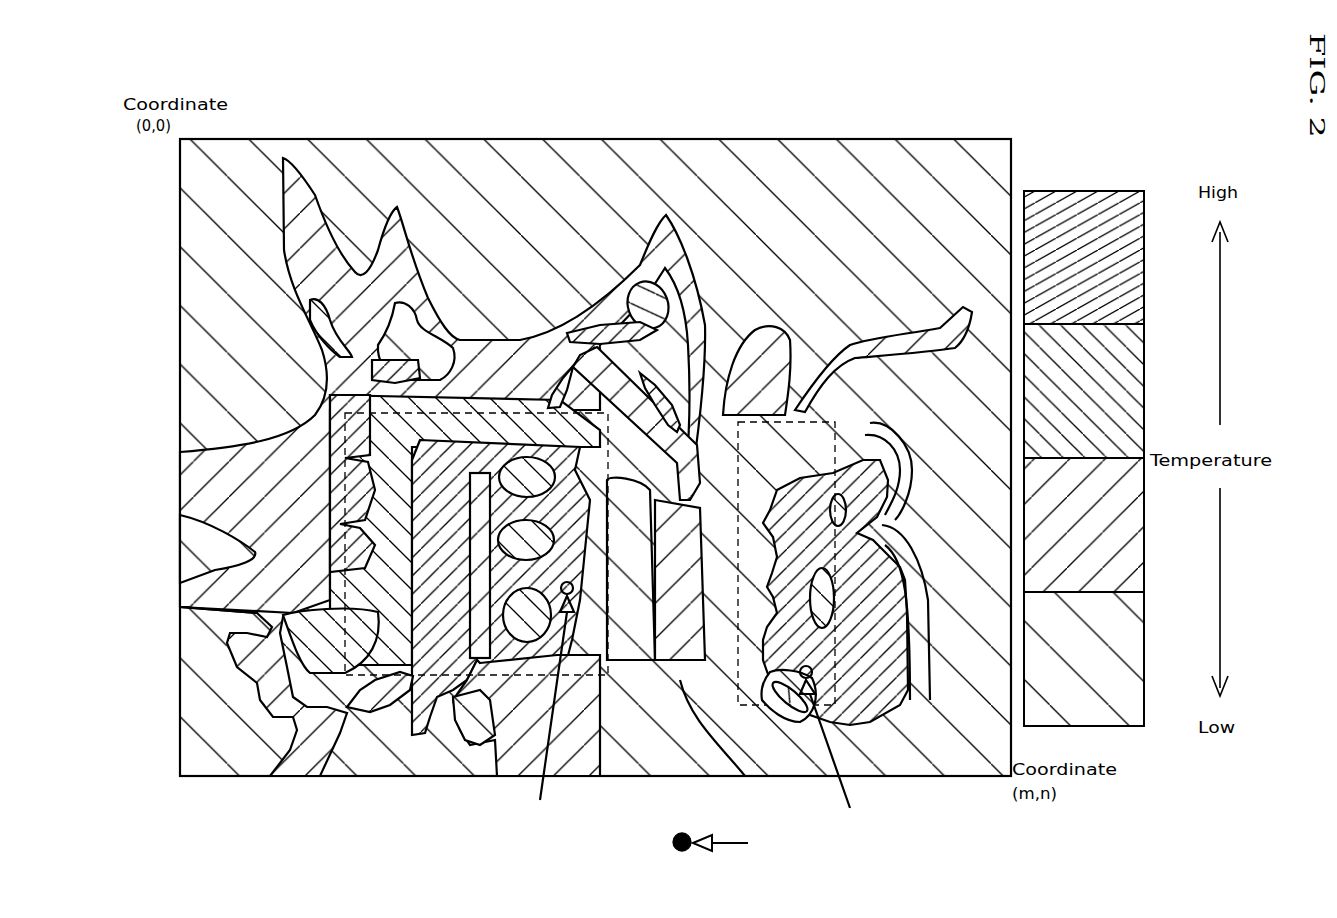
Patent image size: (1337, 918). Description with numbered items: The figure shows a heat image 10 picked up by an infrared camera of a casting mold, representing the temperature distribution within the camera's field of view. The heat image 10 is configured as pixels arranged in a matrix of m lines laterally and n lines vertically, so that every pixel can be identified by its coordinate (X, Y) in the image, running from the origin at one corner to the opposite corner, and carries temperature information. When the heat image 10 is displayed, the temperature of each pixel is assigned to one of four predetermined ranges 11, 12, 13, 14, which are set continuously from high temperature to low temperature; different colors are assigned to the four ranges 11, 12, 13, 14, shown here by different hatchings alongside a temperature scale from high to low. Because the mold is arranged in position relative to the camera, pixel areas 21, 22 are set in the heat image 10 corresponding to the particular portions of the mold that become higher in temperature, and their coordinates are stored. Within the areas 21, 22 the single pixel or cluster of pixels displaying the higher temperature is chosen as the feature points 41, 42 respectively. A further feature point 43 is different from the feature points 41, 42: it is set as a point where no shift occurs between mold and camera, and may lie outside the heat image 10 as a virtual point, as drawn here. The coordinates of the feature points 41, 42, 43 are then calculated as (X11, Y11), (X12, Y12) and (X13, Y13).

The heat image 10 is at (593, 139).
The temperature range 11 is at (1145, 258).
The temperature range 12 is at (1145, 392).
The temperature range 13 is at (1145, 525).
The temperature range 14 is at (1145, 660).
The pixel area 21 is at (478, 413).
The pixel area 22 is at (795, 422).
The feature point 41 is at (580, 593).
The feature point 42 is at (785, 700).
The feature point 43 is at (673, 842).